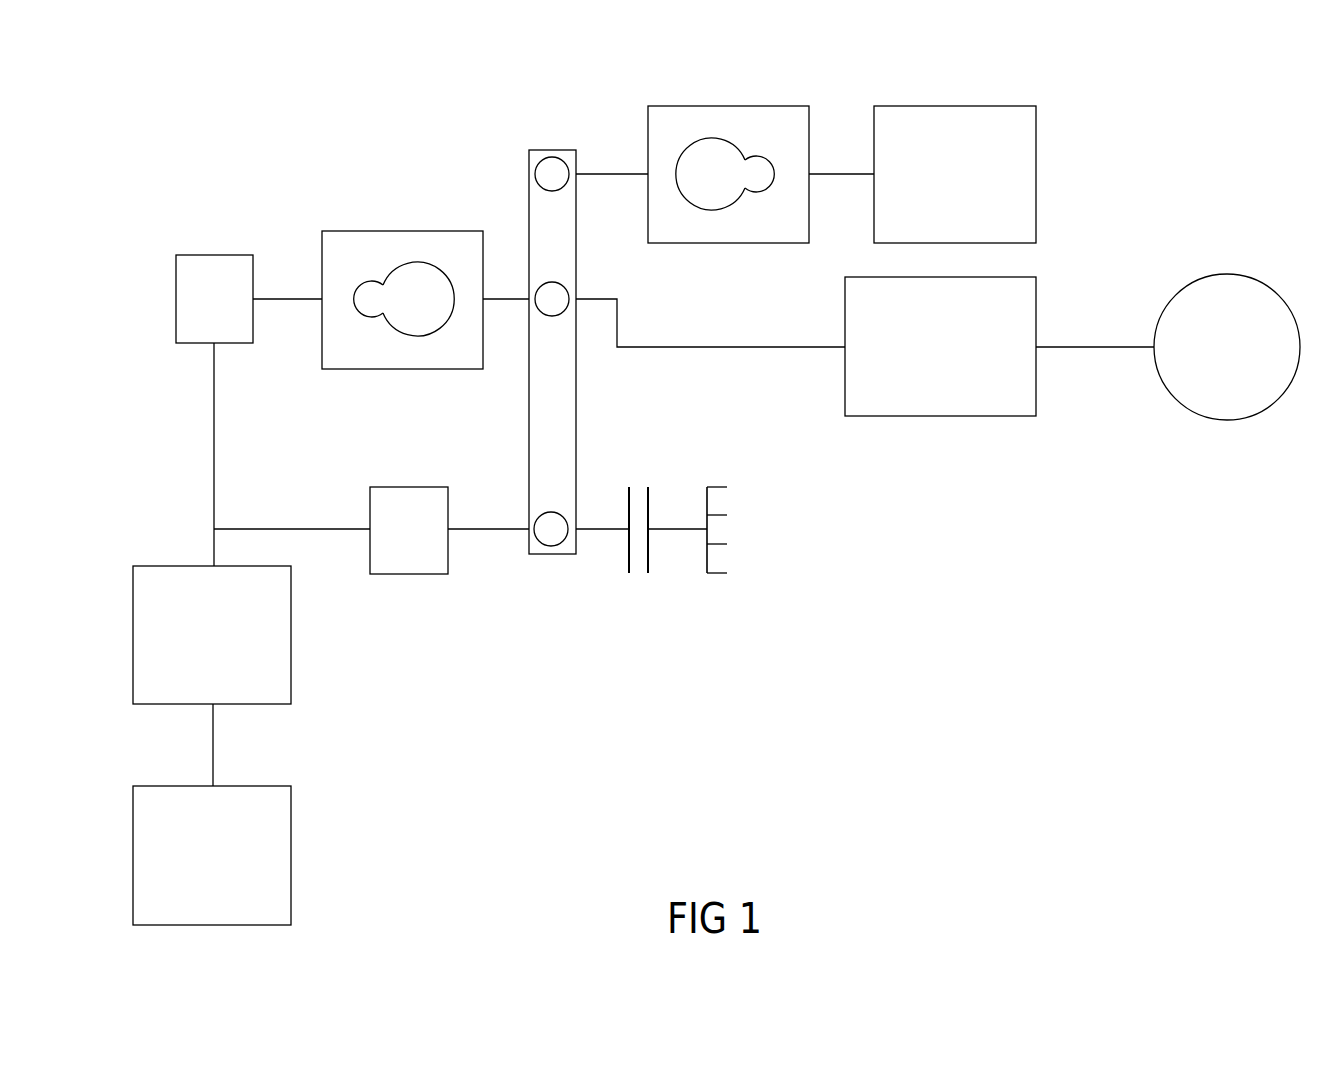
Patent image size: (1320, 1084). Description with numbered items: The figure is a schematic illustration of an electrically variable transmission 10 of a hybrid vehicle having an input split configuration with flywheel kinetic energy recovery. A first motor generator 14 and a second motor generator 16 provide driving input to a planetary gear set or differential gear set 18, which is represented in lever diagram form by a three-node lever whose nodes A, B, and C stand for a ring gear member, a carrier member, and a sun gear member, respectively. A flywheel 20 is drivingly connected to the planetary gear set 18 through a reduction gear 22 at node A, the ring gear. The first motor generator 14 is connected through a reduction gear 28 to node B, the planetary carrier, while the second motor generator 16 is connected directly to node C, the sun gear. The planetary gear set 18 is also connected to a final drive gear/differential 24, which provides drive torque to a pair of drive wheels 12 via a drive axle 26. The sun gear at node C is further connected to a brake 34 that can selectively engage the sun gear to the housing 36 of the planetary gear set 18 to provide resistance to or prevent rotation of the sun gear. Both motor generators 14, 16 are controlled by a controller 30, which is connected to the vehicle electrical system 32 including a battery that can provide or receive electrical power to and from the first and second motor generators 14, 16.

The electrically variable transmission 10 is at (1062, 151).
The drive wheels 12 is at (1215, 358).
The first motor generator 14 is at (202, 310).
The second motor generator 16 is at (397, 540).
The planetary gear set 18 is at (551, 150).
The flywheel 20 is at (943, 185).
The reduction gear 22 is at (700, 185).
The final drive gear/differential 24 is at (929, 358).
The drive axle 26 is at (1095, 347).
The reduction gear 28 is at (405, 310).
The controller 30 is at (200, 646).
The vehicle electrical system 32 is at (200, 866).
The brake 34 is at (639, 574).
The housing 36 is at (718, 542).